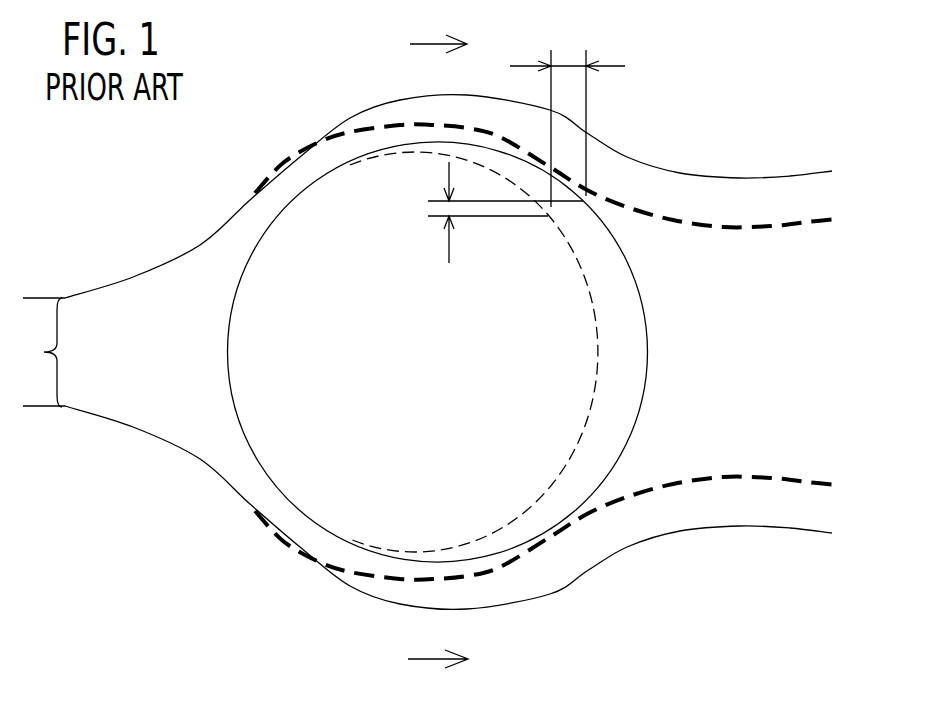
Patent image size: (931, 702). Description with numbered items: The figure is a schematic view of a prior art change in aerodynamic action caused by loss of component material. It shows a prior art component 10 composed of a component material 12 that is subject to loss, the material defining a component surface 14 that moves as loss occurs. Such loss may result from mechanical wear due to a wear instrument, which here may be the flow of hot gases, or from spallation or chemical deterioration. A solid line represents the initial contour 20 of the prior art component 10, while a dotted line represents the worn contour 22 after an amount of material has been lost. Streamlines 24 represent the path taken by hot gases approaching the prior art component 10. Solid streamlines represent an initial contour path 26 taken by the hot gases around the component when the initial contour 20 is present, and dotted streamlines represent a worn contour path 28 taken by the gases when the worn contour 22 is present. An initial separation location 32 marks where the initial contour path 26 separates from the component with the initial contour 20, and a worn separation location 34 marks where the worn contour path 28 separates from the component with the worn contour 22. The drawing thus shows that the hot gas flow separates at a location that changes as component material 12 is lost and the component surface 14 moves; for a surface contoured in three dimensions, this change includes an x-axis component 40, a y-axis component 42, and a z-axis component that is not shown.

The prior art component 10 is at (453, 377).
The component material 12 is at (443, 352).
The component surface 14 is at (232, 313).
The initial contour 20 is at (651, 350).
The worn contour 22 is at (598, 365).
The streamlines 24 is at (38, 352).
The initial contour path 26 is at (712, 178).
The worn contour path 28 is at (767, 228).
The initial separation location 32 is at (585, 201).
The worn separation location 34 is at (550, 216).
The x-axis component 40 is at (567, 66).
The y-axis component 42 is at (447, 244).